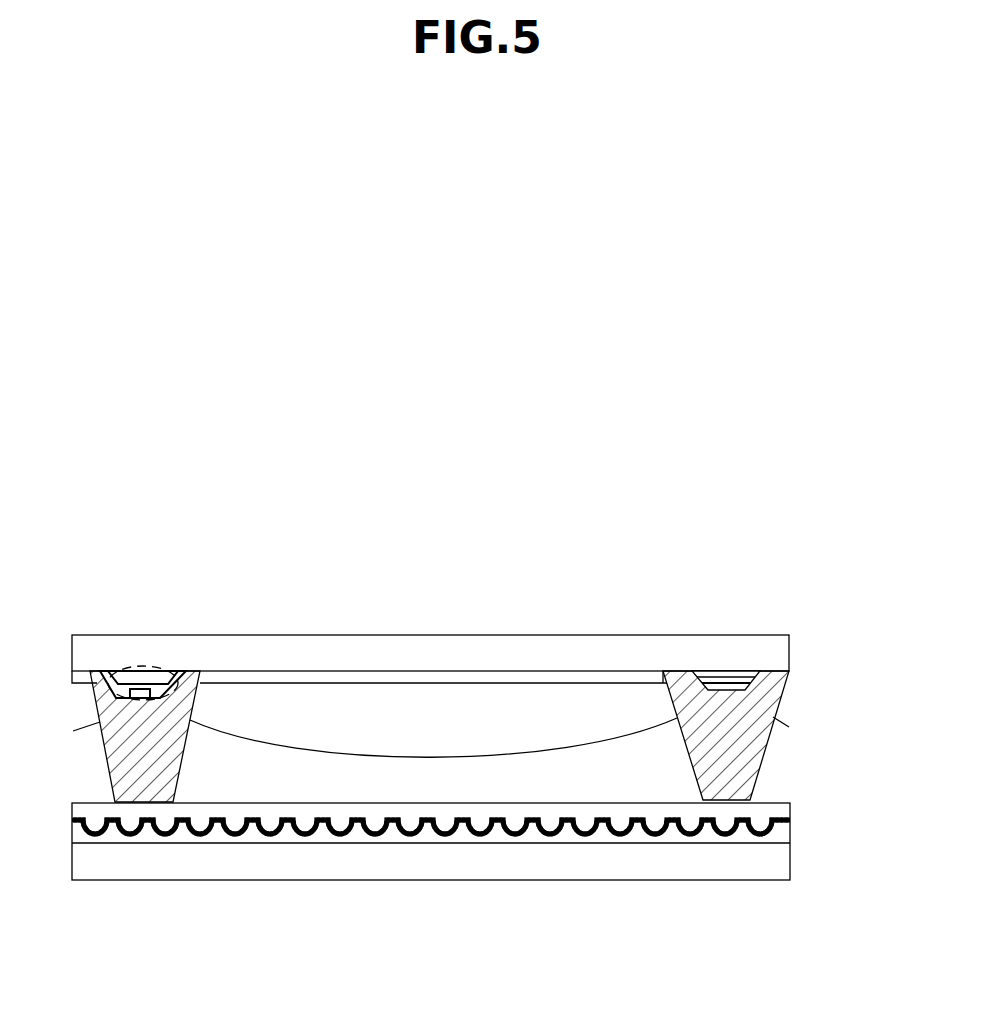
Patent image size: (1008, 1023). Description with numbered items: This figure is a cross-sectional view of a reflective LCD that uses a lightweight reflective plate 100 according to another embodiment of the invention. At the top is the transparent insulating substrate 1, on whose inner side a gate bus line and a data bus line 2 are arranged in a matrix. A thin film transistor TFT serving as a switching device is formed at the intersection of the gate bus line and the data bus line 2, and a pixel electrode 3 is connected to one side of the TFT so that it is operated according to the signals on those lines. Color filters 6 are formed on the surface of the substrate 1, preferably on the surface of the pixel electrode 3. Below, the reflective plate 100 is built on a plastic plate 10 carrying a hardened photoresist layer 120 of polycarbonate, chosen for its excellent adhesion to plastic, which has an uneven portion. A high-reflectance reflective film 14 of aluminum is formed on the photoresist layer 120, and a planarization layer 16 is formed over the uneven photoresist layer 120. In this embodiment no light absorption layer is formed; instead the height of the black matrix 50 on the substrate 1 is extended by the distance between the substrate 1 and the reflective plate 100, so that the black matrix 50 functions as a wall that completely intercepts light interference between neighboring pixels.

The insulating substrate 1 is at (789, 647).
The data bus line 2 is at (728, 660).
The pixel electrode 3 is at (388, 679).
The color filter 6 is at (287, 700).
The thin film transistor TFT is at (148, 650).
The black matrix 50 is at (115, 765).
The reflective plate 100 is at (506, 860).
The plastic plate 10 is at (790, 867).
The reflective film 14 is at (733, 834).
The planarization layer 16 is at (453, 823).
The photoresist layer 120 is at (622, 838).